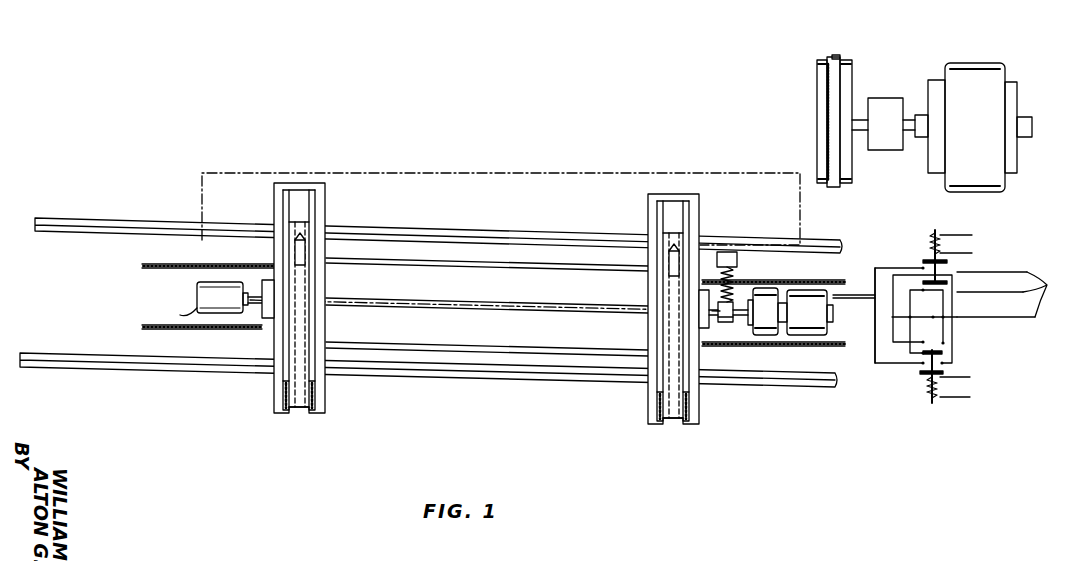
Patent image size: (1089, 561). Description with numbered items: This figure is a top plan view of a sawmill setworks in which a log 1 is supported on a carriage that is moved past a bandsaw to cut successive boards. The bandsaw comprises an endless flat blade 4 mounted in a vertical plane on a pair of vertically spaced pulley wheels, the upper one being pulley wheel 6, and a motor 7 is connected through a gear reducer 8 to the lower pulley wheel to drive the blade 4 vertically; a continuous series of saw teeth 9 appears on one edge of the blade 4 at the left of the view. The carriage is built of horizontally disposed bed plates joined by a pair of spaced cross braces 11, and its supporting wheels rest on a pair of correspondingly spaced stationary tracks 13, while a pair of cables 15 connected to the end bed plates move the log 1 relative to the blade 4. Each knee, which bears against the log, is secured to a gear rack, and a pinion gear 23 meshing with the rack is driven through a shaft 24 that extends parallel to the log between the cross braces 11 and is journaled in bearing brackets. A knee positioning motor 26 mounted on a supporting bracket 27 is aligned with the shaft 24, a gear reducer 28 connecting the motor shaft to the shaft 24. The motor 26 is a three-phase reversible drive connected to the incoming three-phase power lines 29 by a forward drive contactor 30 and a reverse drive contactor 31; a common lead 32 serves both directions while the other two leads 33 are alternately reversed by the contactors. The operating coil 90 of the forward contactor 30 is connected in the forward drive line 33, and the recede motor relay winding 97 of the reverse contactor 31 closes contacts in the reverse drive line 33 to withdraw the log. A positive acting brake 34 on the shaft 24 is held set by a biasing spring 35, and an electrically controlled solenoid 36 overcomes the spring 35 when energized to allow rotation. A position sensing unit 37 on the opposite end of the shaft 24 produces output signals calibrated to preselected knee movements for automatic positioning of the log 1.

The log 1 is at (455, 175).
The endless flat blade 4 is at (838, 56).
The pulley wheel 6 is at (817, 70).
The motor 7 is at (1000, 108).
The gear reducer 8 is at (896, 98).
The saw teeth 9 is at (826, 115).
The cross braces 11 is at (507, 263).
The stationary tracks 13 is at (493, 232).
The cables 15 is at (145, 264).
The pinion gear 23 is at (332, 292).
The shaft 24 is at (462, 306).
The knee positioning motor 26 is at (832, 318).
The supporting bracket 27 is at (782, 323).
The gear reducer 28 is at (770, 288).
The three-phase power lines 29 is at (1018, 294).
The forward drive contactor 30 is at (972, 246).
The reverse drive contactor 31 is at (968, 388).
The common lead 32 is at (876, 318).
The leads 33 is at (887, 268).
The brake 34 is at (728, 326).
The biasing spring 35 is at (734, 278).
The solenoid 36 is at (728, 252).
The position sensing unit 37 is at (188, 297).
The operating coil 90 is at (931, 240).
The recede motor relay winding 97 is at (929, 400).